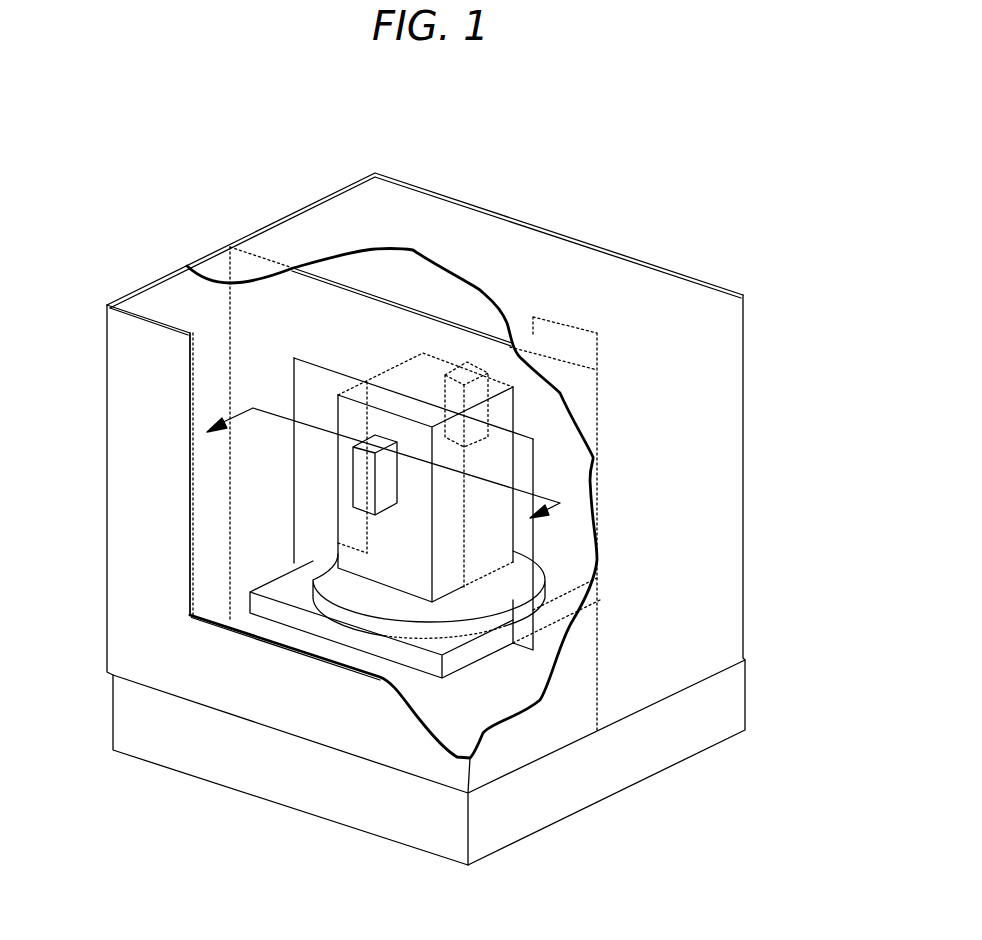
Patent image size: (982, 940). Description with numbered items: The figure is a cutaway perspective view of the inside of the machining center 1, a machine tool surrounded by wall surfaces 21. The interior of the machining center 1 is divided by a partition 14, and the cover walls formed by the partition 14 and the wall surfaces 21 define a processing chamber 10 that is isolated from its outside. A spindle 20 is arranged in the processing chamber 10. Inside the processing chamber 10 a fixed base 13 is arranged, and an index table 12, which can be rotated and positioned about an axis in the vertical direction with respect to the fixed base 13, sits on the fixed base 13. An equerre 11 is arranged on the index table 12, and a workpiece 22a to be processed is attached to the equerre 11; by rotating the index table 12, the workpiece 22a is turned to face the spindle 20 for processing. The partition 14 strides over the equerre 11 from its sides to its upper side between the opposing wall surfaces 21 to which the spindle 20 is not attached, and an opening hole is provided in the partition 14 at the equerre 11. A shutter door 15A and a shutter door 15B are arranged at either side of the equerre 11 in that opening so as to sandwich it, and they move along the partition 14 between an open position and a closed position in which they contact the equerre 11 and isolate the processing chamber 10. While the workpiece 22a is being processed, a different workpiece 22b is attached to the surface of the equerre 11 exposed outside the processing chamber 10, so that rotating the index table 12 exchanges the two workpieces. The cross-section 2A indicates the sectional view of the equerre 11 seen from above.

The machining center 1 is at (523, 213).
The processing chamber 10 is at (420, 203).
The equerre 11 is at (393, 397).
The index table 12 is at (540, 565).
The fixed base 13 is at (557, 613).
The partition 14 is at (332, 350).
The shutter door 15A is at (307, 405).
The shutter door 15B is at (527, 458).
The spindle 20 is at (622, 320).
The wall surfaces 21 is at (130, 353).
The workpiece 22a is at (490, 362).
The workpiece 22b is at (352, 475).
The cross-section 2A is at (385, 470).